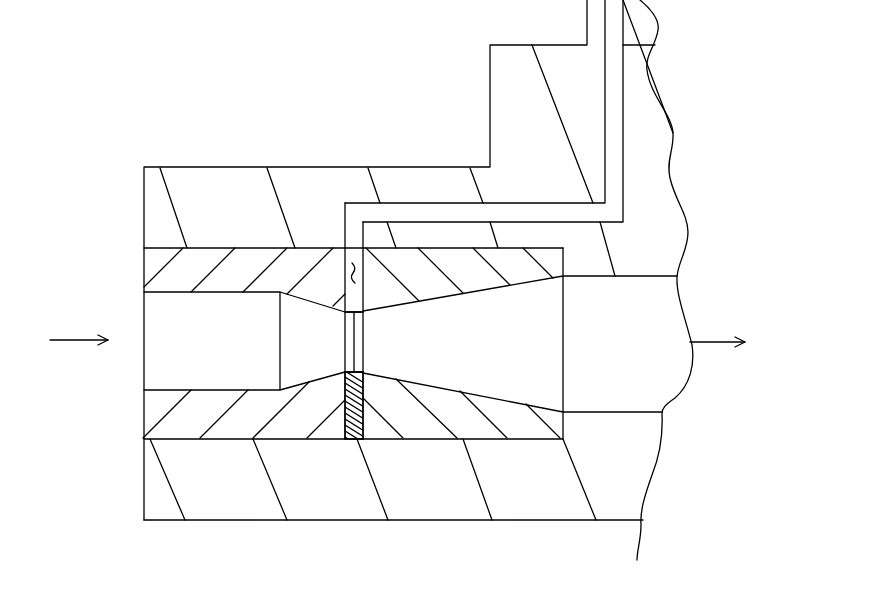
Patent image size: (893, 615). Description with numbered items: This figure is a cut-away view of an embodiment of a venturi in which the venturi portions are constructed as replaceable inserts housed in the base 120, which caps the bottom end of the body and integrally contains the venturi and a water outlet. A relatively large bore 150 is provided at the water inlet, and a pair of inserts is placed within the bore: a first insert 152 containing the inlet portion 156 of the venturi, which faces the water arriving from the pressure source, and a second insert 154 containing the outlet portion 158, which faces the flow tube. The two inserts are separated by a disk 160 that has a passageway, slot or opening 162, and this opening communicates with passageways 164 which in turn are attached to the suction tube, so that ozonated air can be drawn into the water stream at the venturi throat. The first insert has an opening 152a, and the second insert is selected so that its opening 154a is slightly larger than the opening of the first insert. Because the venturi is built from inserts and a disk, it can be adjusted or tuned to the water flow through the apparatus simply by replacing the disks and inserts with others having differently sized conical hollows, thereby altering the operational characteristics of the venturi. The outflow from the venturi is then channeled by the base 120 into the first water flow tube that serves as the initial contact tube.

The base 120 is at (235, 152).
The bore 150 is at (143, 420).
The insert 152 is at (143, 232).
The opening 152a is at (345, 337).
The insert 154 is at (440, 247).
The opening 154a is at (363, 325).
The inlet portion 156 is at (226, 337).
The outlet portion 158 is at (531, 338).
The disk 160 is at (344, 412).
The opening 162 is at (349, 270).
The passageways 164 is at (468, 203).